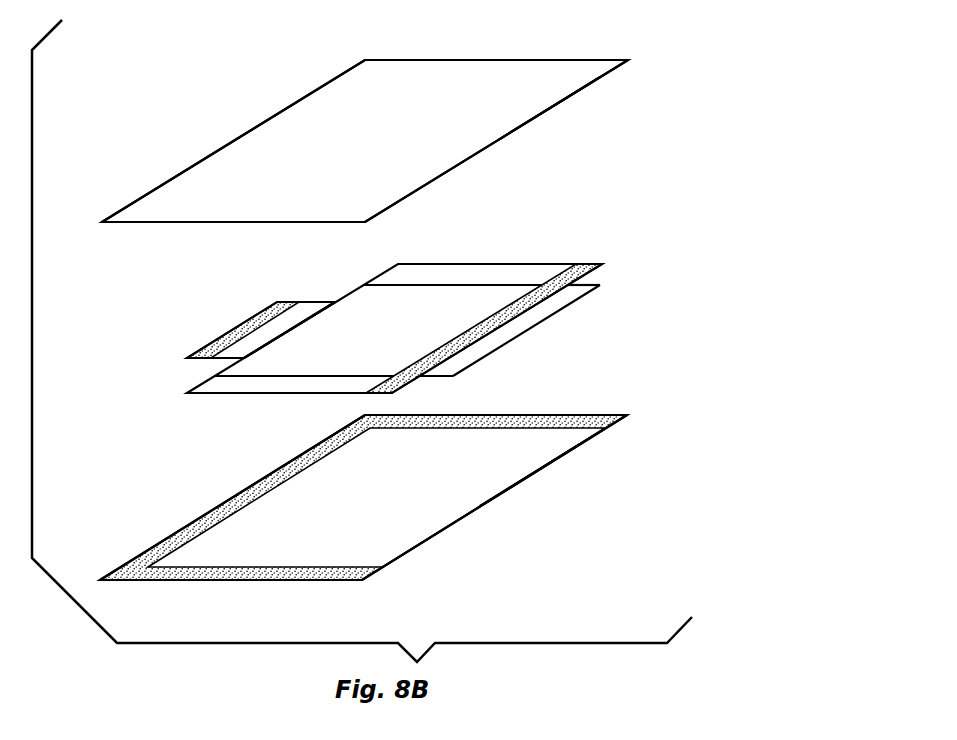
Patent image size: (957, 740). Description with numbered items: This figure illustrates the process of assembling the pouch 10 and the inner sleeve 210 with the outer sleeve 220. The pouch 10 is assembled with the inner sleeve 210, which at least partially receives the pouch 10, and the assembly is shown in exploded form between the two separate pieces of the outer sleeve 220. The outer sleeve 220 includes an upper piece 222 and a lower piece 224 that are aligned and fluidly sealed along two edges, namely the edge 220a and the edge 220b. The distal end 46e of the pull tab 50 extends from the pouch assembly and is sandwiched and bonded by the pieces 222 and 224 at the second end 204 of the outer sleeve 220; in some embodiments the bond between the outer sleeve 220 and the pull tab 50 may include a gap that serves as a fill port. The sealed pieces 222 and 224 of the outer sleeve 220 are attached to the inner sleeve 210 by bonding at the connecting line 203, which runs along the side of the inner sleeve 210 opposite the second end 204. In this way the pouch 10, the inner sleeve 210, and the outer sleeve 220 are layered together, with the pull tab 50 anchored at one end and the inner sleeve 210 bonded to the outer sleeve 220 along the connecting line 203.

The pouch 10 is at (570, 293).
The pull tab 50 is at (307, 310).
The distal end 46e is at (238, 325).
The connecting line 203 is at (477, 155).
The second end 204 is at (200, 158).
The inner sleeve 210 is at (549, 265).
The outer sleeve 220 is at (543, 95).
The edge 220a is at (217, 222).
The edge 220b is at (530, 60).
The piece 222 is at (395, 151).
The piece 224 is at (389, 516).